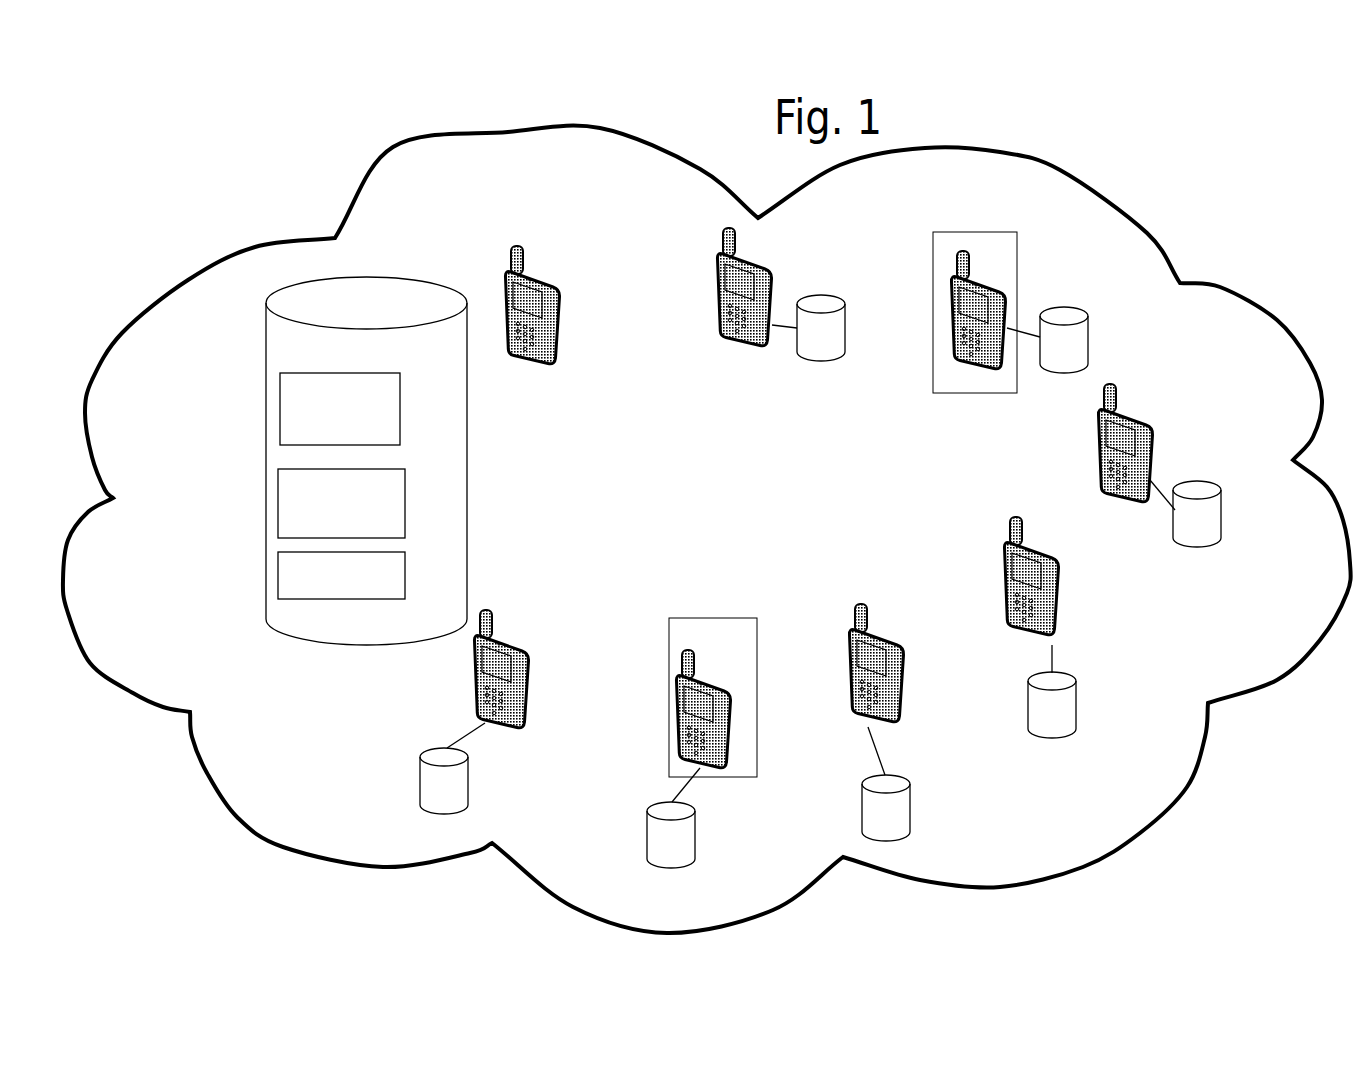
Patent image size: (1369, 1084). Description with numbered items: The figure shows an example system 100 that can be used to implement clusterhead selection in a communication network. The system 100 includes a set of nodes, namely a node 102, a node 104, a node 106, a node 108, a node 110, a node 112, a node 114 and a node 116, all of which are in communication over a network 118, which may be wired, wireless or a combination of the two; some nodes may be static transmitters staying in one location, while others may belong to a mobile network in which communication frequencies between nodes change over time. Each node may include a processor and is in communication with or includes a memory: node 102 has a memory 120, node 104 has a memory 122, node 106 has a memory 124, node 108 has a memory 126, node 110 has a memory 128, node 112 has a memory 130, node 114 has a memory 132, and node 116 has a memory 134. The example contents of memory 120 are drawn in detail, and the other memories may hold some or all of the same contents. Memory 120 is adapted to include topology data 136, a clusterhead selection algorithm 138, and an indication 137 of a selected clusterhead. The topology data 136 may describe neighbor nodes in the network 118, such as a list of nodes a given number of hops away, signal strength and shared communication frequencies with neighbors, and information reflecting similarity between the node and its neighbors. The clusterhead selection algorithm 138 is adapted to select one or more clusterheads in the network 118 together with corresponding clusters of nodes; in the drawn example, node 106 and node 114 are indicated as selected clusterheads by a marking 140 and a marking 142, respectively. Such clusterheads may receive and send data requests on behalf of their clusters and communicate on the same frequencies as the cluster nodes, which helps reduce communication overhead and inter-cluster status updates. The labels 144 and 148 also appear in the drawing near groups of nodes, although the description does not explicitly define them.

The system 100 is at (1097, 152).
The node 102 is at (560, 313).
The node 104 is at (782, 268).
The node 106 is at (1007, 310).
The node 108 is at (1163, 440).
The node 110 is at (1102, 580).
The node 112 is at (935, 665).
The node 114 is at (737, 712).
The node 116 is at (528, 692).
The network 118 is at (727, 499).
The memory 120 is at (468, 468).
The memory 122 is at (845, 330).
The memory 124 is at (1090, 338).
The memory 126 is at (1223, 513).
The memory 128 is at (1077, 705).
The memory 130 is at (862, 807).
The memory 132 is at (633, 838).
The memory 134 is at (420, 782).
The topology data 136 is at (392, 407).
The indication of a selected clusterhead 137 is at (407, 568).
The clusterhead selection algorithm 138 is at (403, 512).
The marking 140 is at (947, 397).
The marking 142 is at (718, 617).
The cluster 144 is at (860, 288).
The cluster 148 is at (575, 253).